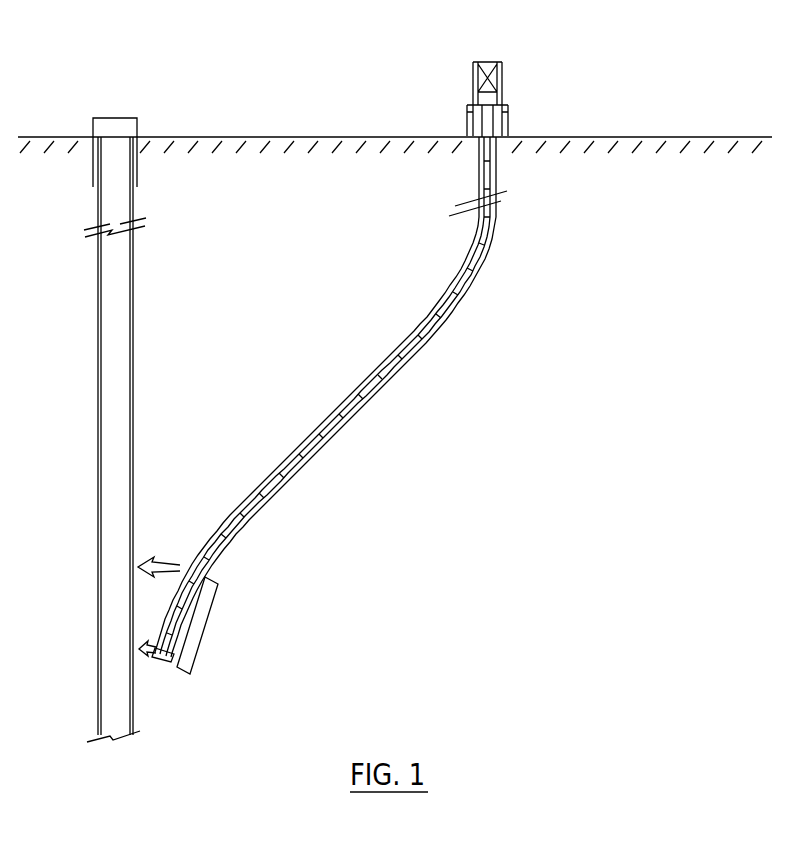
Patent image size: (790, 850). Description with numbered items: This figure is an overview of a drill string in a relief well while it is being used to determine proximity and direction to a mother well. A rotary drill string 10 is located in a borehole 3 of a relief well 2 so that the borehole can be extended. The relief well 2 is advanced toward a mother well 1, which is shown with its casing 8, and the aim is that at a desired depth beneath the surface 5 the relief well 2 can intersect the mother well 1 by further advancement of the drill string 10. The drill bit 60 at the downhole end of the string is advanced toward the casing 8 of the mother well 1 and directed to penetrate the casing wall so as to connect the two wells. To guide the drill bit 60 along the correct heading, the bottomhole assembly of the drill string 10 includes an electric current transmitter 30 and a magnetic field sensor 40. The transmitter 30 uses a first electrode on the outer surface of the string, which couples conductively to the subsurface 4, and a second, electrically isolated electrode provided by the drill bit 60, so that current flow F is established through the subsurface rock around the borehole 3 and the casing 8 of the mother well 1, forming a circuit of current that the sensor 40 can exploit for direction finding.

The mother well 1 is at (146, 122).
The relief well 2 is at (523, 118).
The borehole 3 is at (495, 250).
The subsurface 4 is at (382, 215).
The surface 5 is at (270, 135).
The casing 8 is at (99, 405).
The rotary drill string 10 is at (398, 385).
The fluid flow F is at (400, 330).
The electric current transmitter 30 is at (205, 626).
The magnetic field sensor 40 is at (188, 640).
The drill bit 60 is at (157, 665).